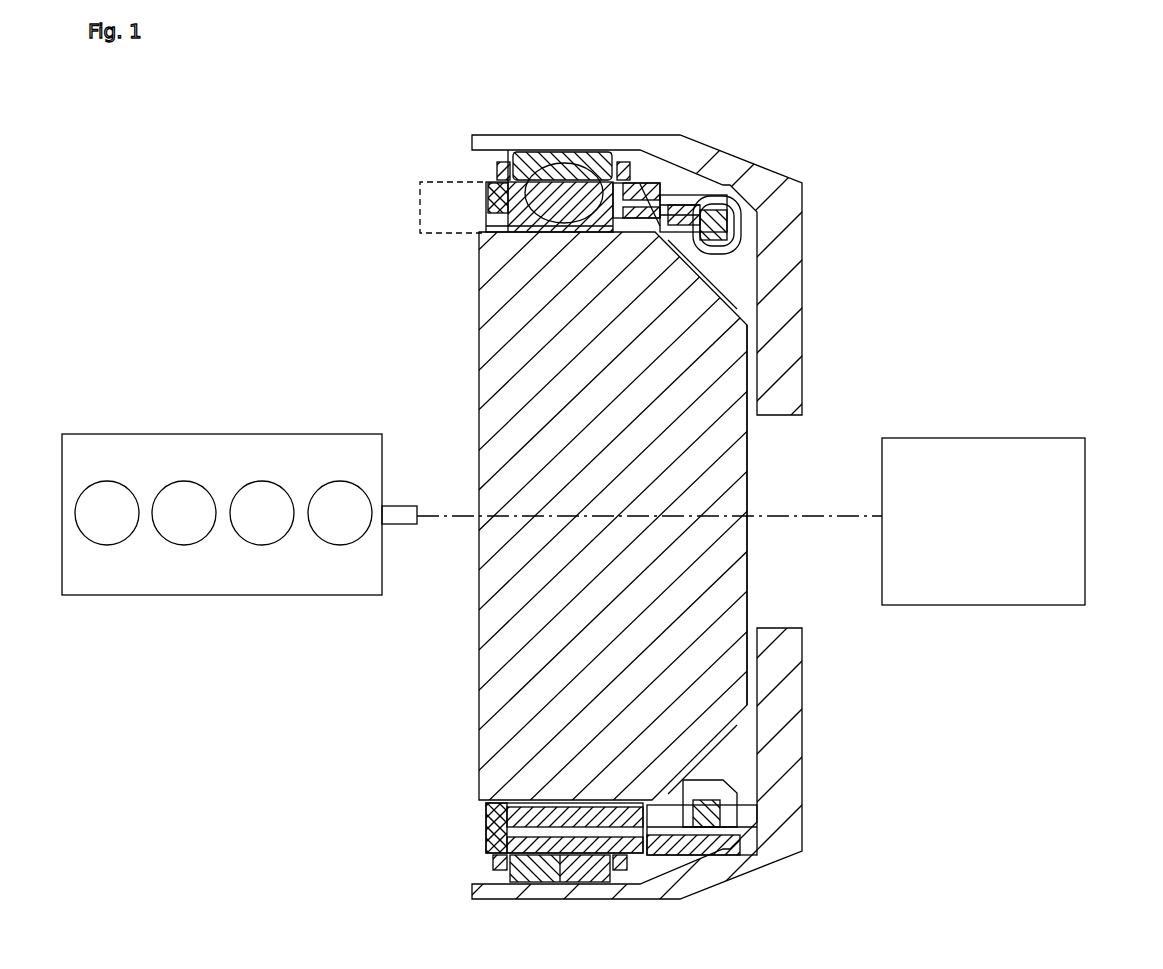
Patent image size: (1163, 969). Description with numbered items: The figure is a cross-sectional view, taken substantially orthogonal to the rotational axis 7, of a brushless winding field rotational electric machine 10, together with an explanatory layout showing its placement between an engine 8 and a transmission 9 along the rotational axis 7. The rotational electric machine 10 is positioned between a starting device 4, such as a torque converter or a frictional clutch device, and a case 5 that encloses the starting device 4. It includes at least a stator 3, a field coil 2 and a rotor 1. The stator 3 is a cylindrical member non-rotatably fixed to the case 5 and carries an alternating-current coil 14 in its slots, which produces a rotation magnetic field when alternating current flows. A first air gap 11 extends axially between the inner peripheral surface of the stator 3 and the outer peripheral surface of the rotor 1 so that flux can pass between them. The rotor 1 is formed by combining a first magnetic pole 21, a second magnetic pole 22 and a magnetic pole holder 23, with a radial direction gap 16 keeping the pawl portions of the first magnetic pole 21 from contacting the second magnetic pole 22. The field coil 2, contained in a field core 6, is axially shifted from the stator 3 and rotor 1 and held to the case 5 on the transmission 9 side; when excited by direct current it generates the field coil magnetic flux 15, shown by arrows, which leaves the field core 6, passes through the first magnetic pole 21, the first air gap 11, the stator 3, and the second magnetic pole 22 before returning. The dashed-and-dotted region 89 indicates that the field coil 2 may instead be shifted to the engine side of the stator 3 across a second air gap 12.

The rotor 1 is at (466, 205).
The field coil 2 is at (757, 212).
The stator 3 is at (480, 167).
The starting device 4 is at (485, 352).
The case 5 is at (519, 152).
The field core 6 is at (746, 221).
The rotational axis 7 is at (452, 515).
The engine 8 is at (105, 440).
The transmission 9 is at (1085, 518).
The rotational electric machine 10 is at (331, 131).
The first air gap 11 is at (615, 168).
The second air gap 12 is at (660, 226).
The alternating-current coil 14 is at (500, 163).
The field coil magnetic flux 15 is at (750, 250).
The radial direction gap 16 is at (573, 862).
The first magnetic pole 21 is at (641, 173).
The second magnetic pole 22 is at (492, 197).
The magnetic pole holder 23 is at (484, 215).
The region 89 is at (420, 222).